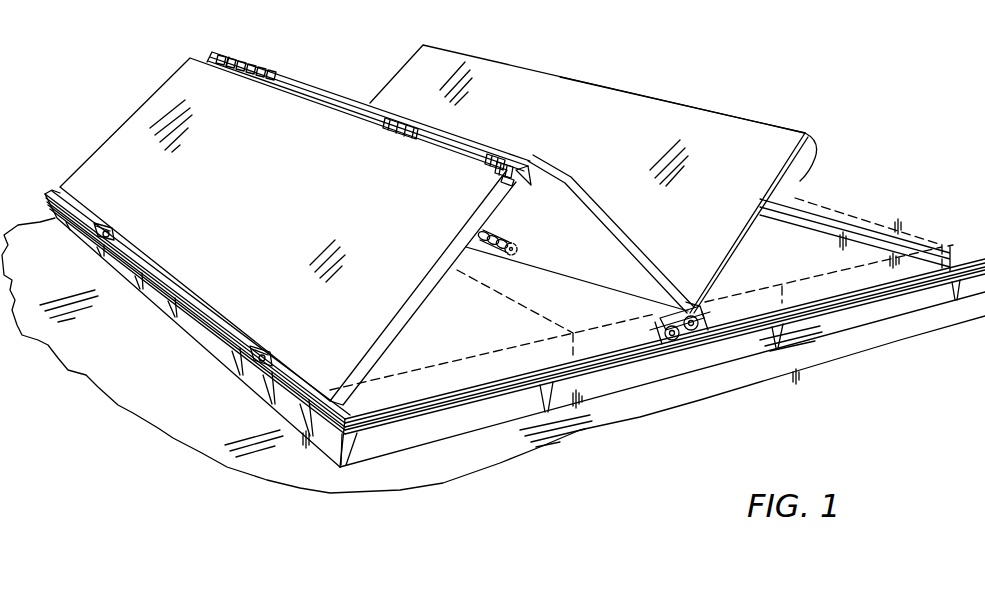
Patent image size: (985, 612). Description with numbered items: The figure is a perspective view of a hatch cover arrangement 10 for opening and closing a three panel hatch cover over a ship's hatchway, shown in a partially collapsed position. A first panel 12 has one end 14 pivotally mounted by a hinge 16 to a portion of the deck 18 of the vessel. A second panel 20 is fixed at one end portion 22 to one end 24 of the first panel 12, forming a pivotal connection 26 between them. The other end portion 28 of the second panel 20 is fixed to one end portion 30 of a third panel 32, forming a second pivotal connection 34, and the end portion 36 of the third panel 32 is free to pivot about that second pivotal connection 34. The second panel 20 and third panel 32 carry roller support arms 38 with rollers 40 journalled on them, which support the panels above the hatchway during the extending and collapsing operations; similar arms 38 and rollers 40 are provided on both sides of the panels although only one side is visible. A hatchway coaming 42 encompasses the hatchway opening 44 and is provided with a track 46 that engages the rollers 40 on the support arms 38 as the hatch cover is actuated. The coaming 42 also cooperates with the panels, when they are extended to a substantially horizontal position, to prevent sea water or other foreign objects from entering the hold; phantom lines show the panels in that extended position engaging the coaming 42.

The hatch cover arrangement 10 is at (515, 240).
The first panel 12 is at (246, 195).
The one end of first panel 14 is at (302, 362).
The hinge 16 is at (100, 226).
The deck 18 is at (86, 356).
The second panel 20 is at (558, 269).
The one end portion of second panel 22 is at (536, 182).
The one end of first panel 24 is at (449, 158).
The pivotal connection 26 is at (341, 98).
The other end portion of second panel 28 is at (614, 268).
The one end portion of third panel 30 is at (690, 298).
The third panel 32 is at (620, 141).
The second pivotal connection 34 is at (481, 252).
The end portion of third panel 36 is at (692, 114).
The roller support arms 38 is at (648, 322).
The rollers 40 is at (674, 342).
The hatchway coaming 42 is at (815, 332).
The hatchway opening 44 is at (475, 333).
The track 46 is at (456, 405).